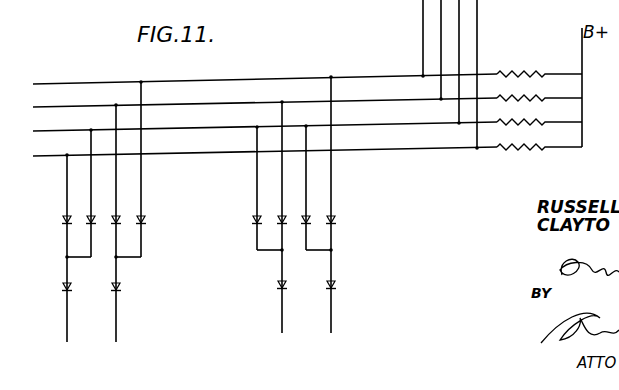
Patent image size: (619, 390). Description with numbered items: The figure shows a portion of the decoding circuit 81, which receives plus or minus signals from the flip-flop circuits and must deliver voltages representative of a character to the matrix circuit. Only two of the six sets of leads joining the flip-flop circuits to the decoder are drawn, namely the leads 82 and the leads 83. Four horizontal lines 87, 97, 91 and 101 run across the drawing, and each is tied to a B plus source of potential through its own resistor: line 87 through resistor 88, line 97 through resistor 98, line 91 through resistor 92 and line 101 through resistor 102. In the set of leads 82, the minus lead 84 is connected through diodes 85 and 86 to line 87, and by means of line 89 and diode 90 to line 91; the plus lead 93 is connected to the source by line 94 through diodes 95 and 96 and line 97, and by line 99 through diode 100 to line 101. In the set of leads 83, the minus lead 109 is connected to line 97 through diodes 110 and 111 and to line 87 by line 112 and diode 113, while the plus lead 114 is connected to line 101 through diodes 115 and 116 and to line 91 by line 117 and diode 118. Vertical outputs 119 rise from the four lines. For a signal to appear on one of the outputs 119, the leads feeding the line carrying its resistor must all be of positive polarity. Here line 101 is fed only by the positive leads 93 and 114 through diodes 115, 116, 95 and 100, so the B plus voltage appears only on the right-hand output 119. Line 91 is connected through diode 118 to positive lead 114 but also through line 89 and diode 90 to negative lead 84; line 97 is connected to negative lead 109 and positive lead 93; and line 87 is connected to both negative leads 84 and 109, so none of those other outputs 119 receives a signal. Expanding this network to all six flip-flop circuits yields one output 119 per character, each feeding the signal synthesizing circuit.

The decoding circuit 81 is at (278, 67).
The line 87 is at (306, 76).
The line 97 is at (256, 104).
The line 91 is at (239, 127).
The line 101 is at (172, 154).
The leads 83 is at (110, 230).
The leads 82 is at (297, 226).
The plus lead 114 is at (67, 318).
The line 117 is at (91, 168).
The minus lead 109 is at (117, 325).
The line 112 is at (142, 246).
The diode 116 is at (66, 219).
The diode 118 is at (90, 227).
The diode 115 is at (66, 286).
The diode 111 is at (118, 218).
The diode 113 is at (143, 221).
The diode 110 is at (120, 287).
The plus lead 93 is at (281, 311).
The line 94 is at (282, 172).
The line 99 is at (257, 242).
The minus lead 84 is at (333, 310).
The line 89 is at (307, 173).
The diode 96 is at (280, 218).
The diode 100 is at (256, 219).
The diode 95 is at (280, 285).
The diode 90 is at (308, 216).
The diode 86 is at (333, 218).
The diode 85 is at (333, 283).
The outputs 119 is at (476, 52).
The resistor 88 is at (516, 72).
The resistor 98 is at (540, 99).
The resistor 92 is at (540, 122).
The resistor 102 is at (536, 150).